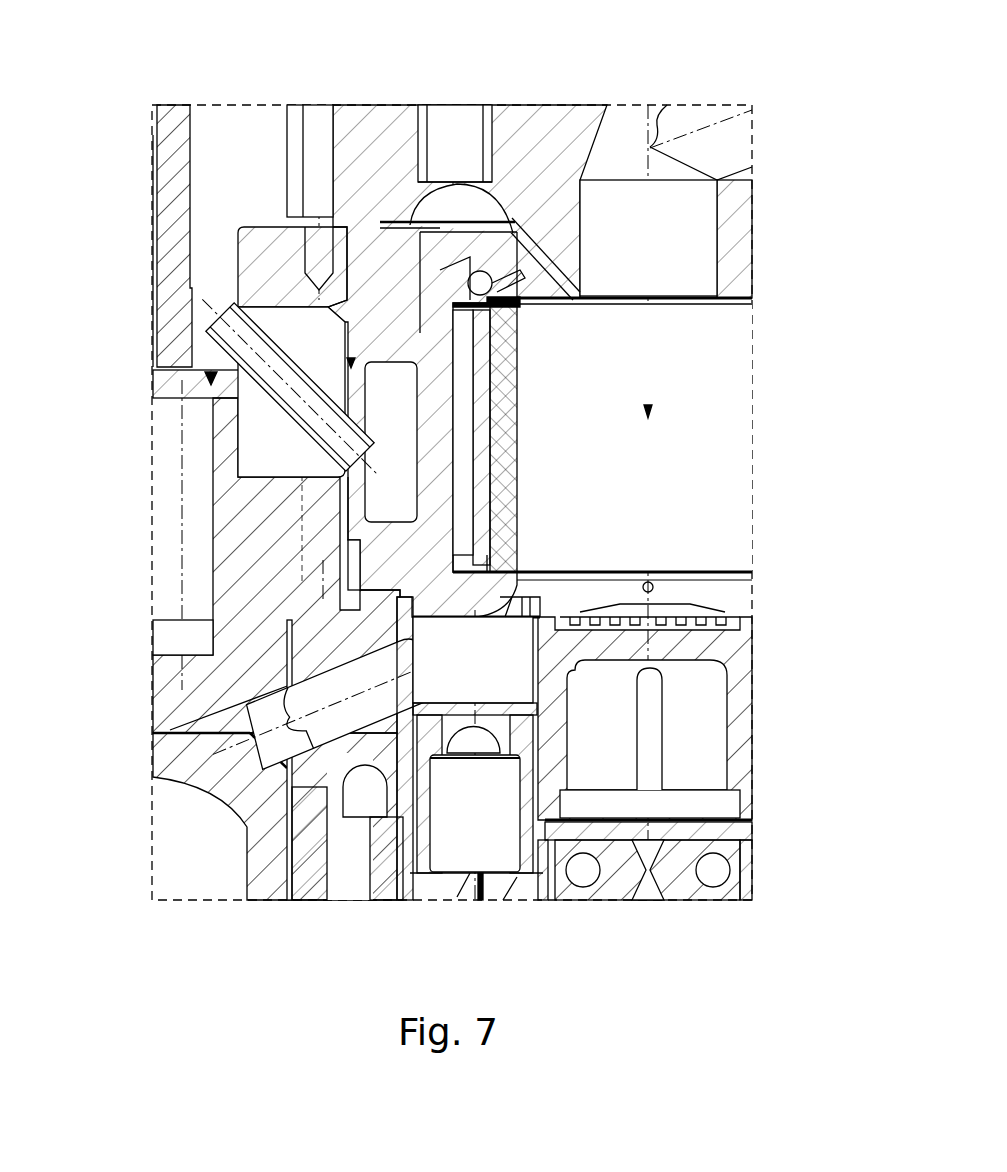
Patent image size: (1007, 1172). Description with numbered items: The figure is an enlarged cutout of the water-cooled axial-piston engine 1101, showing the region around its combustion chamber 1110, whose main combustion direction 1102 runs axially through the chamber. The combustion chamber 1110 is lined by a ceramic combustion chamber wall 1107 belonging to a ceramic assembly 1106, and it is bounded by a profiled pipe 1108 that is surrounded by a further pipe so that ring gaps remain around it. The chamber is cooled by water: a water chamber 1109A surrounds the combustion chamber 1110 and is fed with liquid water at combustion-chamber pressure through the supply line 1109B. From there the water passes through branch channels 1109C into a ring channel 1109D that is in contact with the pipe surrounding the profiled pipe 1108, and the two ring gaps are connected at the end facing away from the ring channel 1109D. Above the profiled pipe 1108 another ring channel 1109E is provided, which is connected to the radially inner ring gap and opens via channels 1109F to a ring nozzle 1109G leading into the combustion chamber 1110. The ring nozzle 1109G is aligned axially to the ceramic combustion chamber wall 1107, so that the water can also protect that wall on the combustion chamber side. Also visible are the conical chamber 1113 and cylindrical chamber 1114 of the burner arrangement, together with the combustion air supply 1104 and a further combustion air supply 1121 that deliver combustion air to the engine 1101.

The axial-piston engine 1101 is at (712, 80).
The main combustion direction 1102 is at (650, 403).
The combustion air supply 1104 is at (442, 133).
The ceramic assembly 1106 is at (510, 422).
The ceramic combustion chamber wall 1107 is at (520, 497).
The profiled pipe 1108 is at (480, 453).
The water chamber 1109A is at (300, 540).
The supply line for liquid water 1109B is at (205, 378).
The branch channel 1109C is at (373, 500).
The ring channel 1109D is at (365, 340).
The ring channel 1109E is at (222, 338).
The channel 1109F is at (520, 268).
The ring nozzle 1109G is at (525, 313).
The combustion chamber 1110 is at (727, 540).
The conical chamber 1113 is at (632, 133).
The cylindrical chamber 1114 is at (703, 207).
The combustion air supply 1121 is at (423, 203).